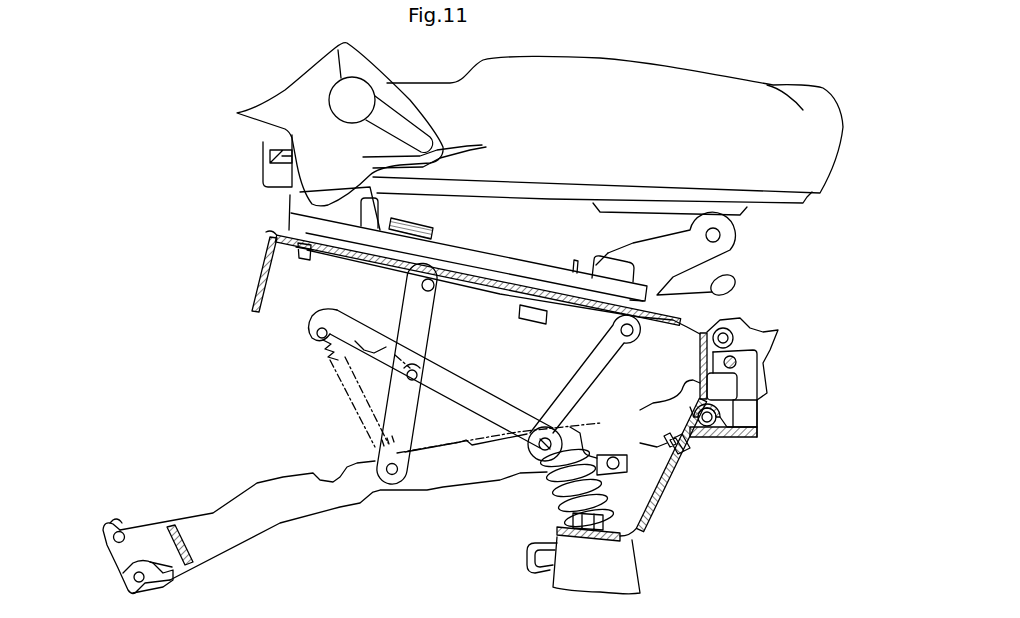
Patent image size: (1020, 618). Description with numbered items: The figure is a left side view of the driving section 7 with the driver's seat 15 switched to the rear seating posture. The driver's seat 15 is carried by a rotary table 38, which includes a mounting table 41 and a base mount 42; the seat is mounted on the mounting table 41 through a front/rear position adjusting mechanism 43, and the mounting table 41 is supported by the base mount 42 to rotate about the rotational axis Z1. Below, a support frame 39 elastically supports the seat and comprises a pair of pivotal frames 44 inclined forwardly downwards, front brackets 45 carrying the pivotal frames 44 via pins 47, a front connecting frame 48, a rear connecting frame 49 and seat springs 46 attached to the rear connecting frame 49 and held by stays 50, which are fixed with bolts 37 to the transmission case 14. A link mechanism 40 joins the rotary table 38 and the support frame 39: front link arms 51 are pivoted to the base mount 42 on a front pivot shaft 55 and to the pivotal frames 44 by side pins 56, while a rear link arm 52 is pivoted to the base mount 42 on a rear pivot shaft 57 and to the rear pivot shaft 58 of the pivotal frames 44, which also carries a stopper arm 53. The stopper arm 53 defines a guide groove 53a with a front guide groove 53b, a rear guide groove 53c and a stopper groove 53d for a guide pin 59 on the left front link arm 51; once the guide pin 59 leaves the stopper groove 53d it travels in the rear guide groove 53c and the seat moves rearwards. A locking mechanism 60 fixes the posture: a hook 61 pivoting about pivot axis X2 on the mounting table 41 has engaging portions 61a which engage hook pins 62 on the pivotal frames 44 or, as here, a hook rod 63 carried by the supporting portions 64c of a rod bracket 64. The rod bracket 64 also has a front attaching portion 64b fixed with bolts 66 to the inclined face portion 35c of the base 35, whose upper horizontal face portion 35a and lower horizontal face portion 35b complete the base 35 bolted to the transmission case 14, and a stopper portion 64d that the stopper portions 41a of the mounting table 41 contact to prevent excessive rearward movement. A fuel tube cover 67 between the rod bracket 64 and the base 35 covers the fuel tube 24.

The driving section 7 is at (138, 71).
The driver's seat 15 is at (719, 85).
The rotary table 38 is at (258, 217).
The stopper portions 41a is at (258, 268).
The guide groove 53a is at (320, 312).
The front link arms 51 is at (407, 283).
The stopper groove 53d is at (378, 335).
The front guide groove 53b is at (316, 340).
The front pivot shaft 55 is at (430, 282).
The mounting table 41 is at (471, 290).
The rotational axis Z1 is at (530, 320).
The front/rear position adjusting mechanism 43 is at (710, 271).
The pivot axis X2 is at (731, 325).
The hook 61 is at (760, 337).
The locking mechanism 60 is at (790, 306).
The rod bracket 64 is at (767, 320).
The hook rod 63 is at (737, 362).
The engaging portions 61a is at (740, 381).
The supporting portions 64c is at (758, 404).
The upper horizontal face portion 35a is at (759, 433).
The stopper portion 64d is at (700, 358).
The rear pivot shaft 57 is at (620, 333).
The rear link arm 52 is at (580, 368).
The stopper arm 53 is at (497, 403).
The rear guide groove 53c is at (418, 368).
The base mount 42 is at (483, 300).
The link mechanism 40 is at (342, 426).
The guide pin 59 is at (413, 383).
The rear pivot shaft 58 is at (530, 448).
The side pins 56 is at (394, 487).
The pivotal frames 44 is at (291, 517).
The support frame 39 is at (230, 494).
The hook pins 62 is at (116, 530).
The front brackets 45 is at (147, 565).
The pins 47 is at (133, 578).
The front connecting frame 48 is at (193, 548).
The seat springs 46 is at (546, 490).
The rear connecting frame 49 is at (598, 455).
The bolts 37 is at (560, 522).
The stays 50 is at (527, 557).
The lower horizontal face portion 35b is at (593, 540).
The transmission case 14 is at (633, 562).
The front attaching portion 64b is at (673, 467).
The base 35 is at (659, 514).
The inclined face portion 35c is at (680, 480).
The bolts 66 is at (668, 443).
The fuel tube cover 67 is at (706, 430).
The fuel tube 24 is at (719, 424).